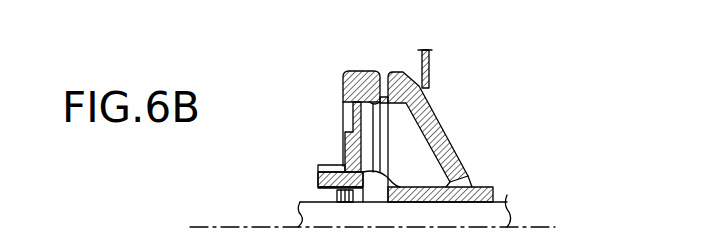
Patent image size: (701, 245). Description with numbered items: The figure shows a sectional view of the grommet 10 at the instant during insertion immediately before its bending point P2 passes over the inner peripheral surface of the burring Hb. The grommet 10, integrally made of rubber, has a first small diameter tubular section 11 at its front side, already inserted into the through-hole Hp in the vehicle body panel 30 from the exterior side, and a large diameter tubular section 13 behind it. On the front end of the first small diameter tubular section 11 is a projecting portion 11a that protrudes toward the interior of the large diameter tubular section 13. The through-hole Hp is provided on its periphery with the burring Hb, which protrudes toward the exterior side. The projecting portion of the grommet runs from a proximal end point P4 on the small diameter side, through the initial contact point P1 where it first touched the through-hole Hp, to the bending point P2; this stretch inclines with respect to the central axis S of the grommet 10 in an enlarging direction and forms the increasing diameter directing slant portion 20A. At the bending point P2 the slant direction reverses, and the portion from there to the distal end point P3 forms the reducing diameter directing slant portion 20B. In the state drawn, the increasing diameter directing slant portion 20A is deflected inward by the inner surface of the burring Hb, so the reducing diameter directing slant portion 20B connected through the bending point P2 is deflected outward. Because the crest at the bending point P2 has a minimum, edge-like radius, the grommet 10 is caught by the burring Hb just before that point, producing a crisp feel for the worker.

The grommet 10 is at (288, 89).
The first small diameter tubular section 11 is at (472, 183).
The projecting portion 11a is at (343, 161).
The large diameter tubular section 13 is at (463, 159).
The increasing diameter directing slant portion 20A is at (440, 133).
The reducing diameter directing slant portion 20B is at (397, 71).
The vehicle body panel 30 is at (432, 51).
The initial contact point P1 is at (433, 122).
The bending point P2 is at (410, 87).
The distal end point P3 is at (384, 70).
The proximal end point P4 is at (470, 177).
The burring Hb is at (431, 75).
The through-hole Hp is at (430, 97).
The central axis S is at (288, 228).